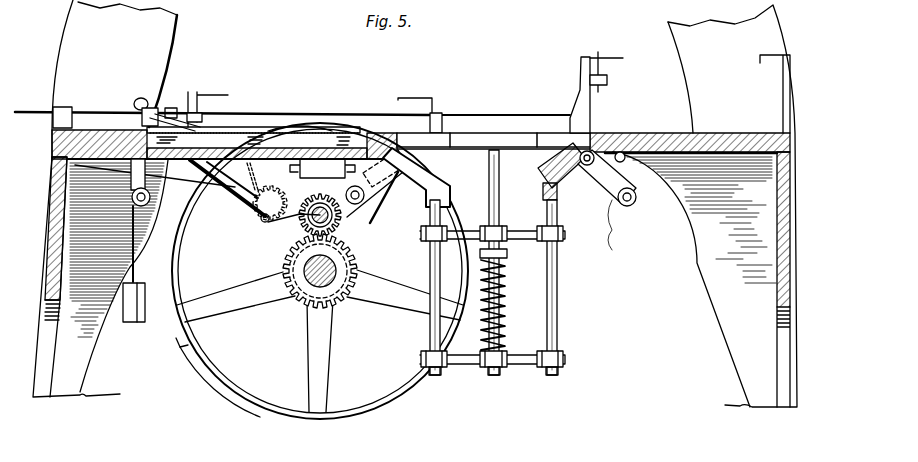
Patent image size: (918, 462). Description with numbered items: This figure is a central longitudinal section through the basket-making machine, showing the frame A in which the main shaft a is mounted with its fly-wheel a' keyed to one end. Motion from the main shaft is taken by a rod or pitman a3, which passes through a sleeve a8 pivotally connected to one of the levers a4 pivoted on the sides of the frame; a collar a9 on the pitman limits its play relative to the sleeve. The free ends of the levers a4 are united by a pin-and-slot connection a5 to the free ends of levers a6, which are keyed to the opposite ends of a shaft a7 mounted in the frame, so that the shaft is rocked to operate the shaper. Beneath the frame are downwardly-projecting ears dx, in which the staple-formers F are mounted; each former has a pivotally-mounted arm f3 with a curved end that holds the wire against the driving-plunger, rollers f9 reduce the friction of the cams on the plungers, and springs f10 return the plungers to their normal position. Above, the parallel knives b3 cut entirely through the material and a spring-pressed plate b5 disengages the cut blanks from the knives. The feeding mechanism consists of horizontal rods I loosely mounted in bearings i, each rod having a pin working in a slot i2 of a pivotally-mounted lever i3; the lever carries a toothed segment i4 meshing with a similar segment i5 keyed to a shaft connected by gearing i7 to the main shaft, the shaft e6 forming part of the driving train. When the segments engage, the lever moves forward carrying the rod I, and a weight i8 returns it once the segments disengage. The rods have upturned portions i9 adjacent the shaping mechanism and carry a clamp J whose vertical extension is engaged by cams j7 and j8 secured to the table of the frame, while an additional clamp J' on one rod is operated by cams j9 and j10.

The frame A is at (137, 53).
The bearings i is at (63, 110).
The horizontal rods I is at (453, 113).
The slots i2 is at (152, 104).
The clamp J is at (170, 104).
The cam j7 is at (214, 94).
The parallel knives b3 is at (226, 128).
The spring-pressed plate b5 is at (265, 128).
The cam j8 is at (401, 95).
The rod or pitman a3 is at (476, 131).
The additional clamp J' is at (589, 95).
The cam j9 is at (605, 57).
The upturned portions i9 is at (608, 82).
The cam j10 is at (768, 58).
The fly-wheel a' is at (320, 271).
The main shaft a is at (312, 282).
The toothed segment i5 is at (322, 197).
The toothed segments i4 is at (267, 192).
The pivotally-mounted levers i3 is at (244, 196).
The shaft e6 is at (302, 226).
The gearing i7 is at (375, 206).
The weight i8 is at (128, 322).
The staple-formers F is at (378, 203).
The springs f10 is at (624, 153).
The collar a9 is at (433, 160).
The sleeve a8 is at (450, 180).
The levers a4 is at (499, 212).
The pin-and-slot connection a5 is at (500, 234).
The shaft a7 is at (505, 312).
The levers a6 is at (560, 298).
The downwardly-projecting ears dx is at (488, 234).
The rollers f9 is at (394, 214).
The pivotally-mounted arm f3 is at (620, 250).